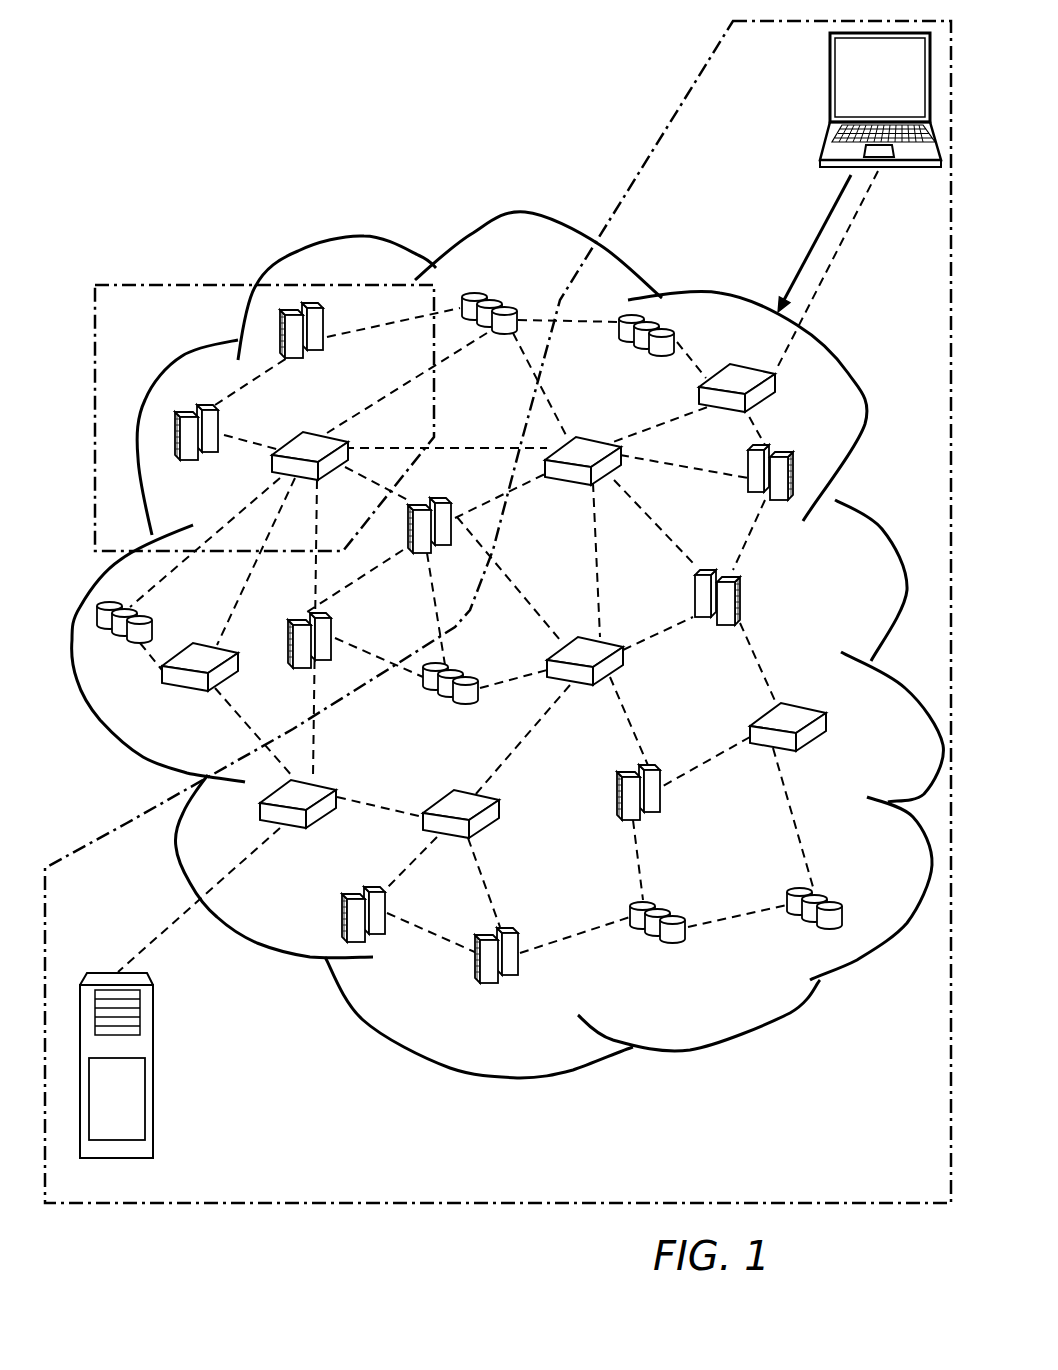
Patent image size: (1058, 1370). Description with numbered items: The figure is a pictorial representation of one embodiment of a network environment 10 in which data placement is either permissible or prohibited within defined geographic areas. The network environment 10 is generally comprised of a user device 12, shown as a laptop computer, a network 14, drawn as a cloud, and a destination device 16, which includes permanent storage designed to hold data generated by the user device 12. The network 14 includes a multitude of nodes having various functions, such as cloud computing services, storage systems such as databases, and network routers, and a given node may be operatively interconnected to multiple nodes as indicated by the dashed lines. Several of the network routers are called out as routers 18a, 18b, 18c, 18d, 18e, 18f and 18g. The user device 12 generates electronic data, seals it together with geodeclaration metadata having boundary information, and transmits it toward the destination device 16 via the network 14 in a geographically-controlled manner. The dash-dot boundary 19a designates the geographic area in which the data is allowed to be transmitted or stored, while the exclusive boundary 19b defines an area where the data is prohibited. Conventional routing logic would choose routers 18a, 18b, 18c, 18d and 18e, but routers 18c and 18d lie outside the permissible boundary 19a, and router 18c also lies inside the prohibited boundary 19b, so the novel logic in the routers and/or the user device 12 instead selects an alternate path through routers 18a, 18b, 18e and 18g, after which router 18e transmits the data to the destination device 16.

The network environment 10 is at (196, 149).
The user device 12 is at (834, 54).
The network 14 is at (336, 236).
The destination device 16 is at (155, 1143).
The router 18a is at (757, 407).
The router 18b is at (557, 485).
The router 18c is at (280, 437).
The router 18d is at (200, 694).
The router 18e is at (327, 813).
The router 18f is at (617, 667).
The router 18g is at (500, 803).
The boundary 19a is at (680, 112).
The exclusive boundary 19b is at (185, 280).